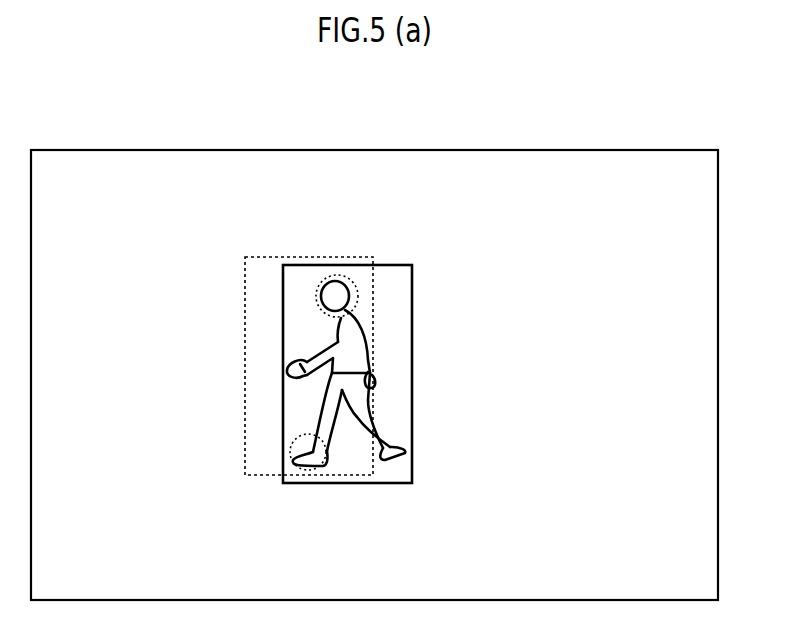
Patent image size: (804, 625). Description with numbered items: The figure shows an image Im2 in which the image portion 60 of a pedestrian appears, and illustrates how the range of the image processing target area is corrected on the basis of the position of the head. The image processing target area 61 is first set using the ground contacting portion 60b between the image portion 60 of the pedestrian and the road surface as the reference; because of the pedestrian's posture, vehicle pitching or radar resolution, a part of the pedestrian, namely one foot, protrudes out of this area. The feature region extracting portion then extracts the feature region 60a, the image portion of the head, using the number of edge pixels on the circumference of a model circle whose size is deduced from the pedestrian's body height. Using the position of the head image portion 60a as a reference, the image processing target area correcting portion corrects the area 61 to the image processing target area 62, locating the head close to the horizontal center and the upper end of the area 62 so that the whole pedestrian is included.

The captured image Im2 is at (463, 149).
The image portion of the pedestrian 60 is at (358, 365).
The feature region 60a is at (354, 282).
The ground contacting portion 60b is at (323, 477).
The image processing target area 61 is at (355, 257).
The corrected image processing target area 62 is at (413, 328).